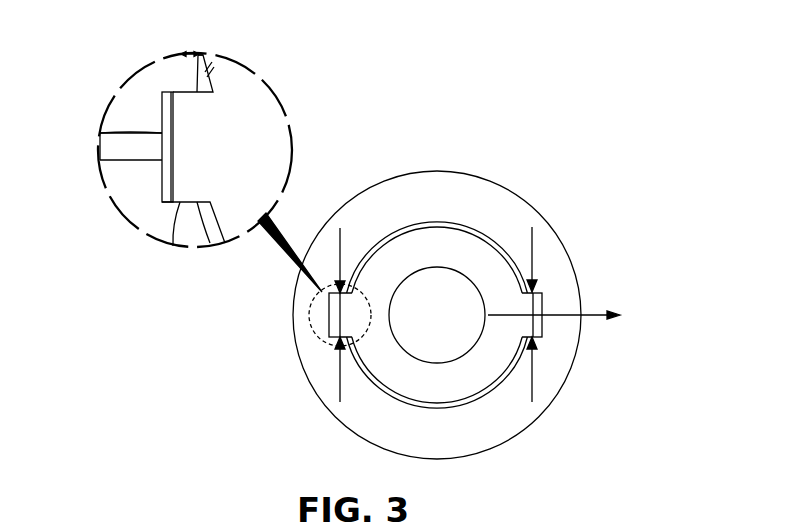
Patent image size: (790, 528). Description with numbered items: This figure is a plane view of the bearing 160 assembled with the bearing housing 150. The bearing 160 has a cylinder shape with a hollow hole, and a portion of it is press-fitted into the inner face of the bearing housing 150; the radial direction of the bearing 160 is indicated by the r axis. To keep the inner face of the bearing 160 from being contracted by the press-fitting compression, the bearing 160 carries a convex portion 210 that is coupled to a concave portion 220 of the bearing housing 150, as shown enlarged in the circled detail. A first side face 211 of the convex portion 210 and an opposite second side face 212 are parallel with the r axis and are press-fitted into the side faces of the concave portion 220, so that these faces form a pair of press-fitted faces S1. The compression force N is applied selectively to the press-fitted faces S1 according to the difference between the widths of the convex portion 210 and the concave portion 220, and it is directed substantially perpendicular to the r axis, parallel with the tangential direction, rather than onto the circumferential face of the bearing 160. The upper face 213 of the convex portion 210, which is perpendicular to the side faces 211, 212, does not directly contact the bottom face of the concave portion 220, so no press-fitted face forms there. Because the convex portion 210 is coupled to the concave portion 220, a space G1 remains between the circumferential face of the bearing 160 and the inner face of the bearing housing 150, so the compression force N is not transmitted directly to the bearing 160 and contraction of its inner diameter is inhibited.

The bearing housing 150 is at (507, 212).
The bearing 160 is at (453, 243).
The convex portion 210 is at (162, 98).
The first side face 211 is at (187, 125).
The second side face 212 is at (177, 247).
The upper face 213 is at (100, 132).
The concave portion 220 is at (96, 161).
The press-fitted faces S1 is at (195, 91).
The space G1 is at (217, 53).
The compression force N is at (331, 247).
The r axis r is at (563, 315).